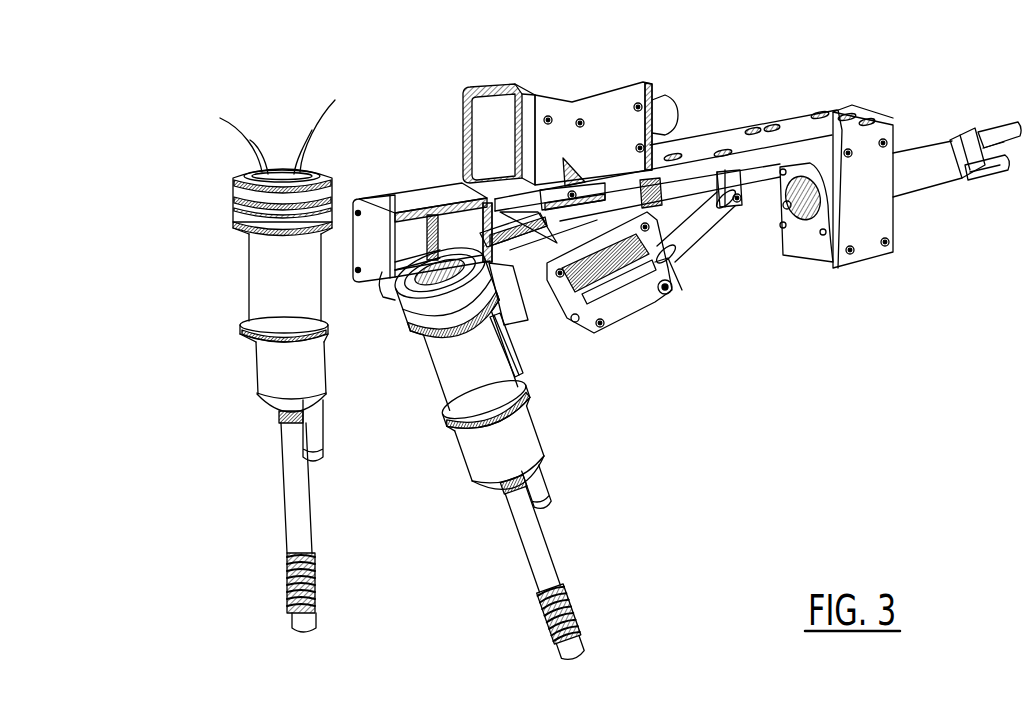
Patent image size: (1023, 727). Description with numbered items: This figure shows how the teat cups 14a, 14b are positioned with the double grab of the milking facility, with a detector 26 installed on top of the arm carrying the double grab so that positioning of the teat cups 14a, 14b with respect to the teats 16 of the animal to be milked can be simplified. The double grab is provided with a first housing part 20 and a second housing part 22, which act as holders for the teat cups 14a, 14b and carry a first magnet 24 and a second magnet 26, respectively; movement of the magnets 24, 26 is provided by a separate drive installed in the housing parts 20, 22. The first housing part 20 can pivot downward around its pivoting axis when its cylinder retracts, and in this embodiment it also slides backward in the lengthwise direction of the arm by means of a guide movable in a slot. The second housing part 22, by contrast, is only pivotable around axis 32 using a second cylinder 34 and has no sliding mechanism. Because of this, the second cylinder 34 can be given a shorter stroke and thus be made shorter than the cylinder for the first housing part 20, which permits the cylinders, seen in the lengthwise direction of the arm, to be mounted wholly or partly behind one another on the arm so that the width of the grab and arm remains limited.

The teat cup 14a is at (275, 291).
The teat cup 14b is at (437, 393).
The teats 16 is at (268, 153).
The first housing part 20 is at (417, 186).
The second housing part 22 is at (512, 275).
The first magnet 24 is at (403, 253).
The detector 26 is at (578, 88).
The axis 32 is at (672, 290).
The second cylinder 34 is at (698, 227).